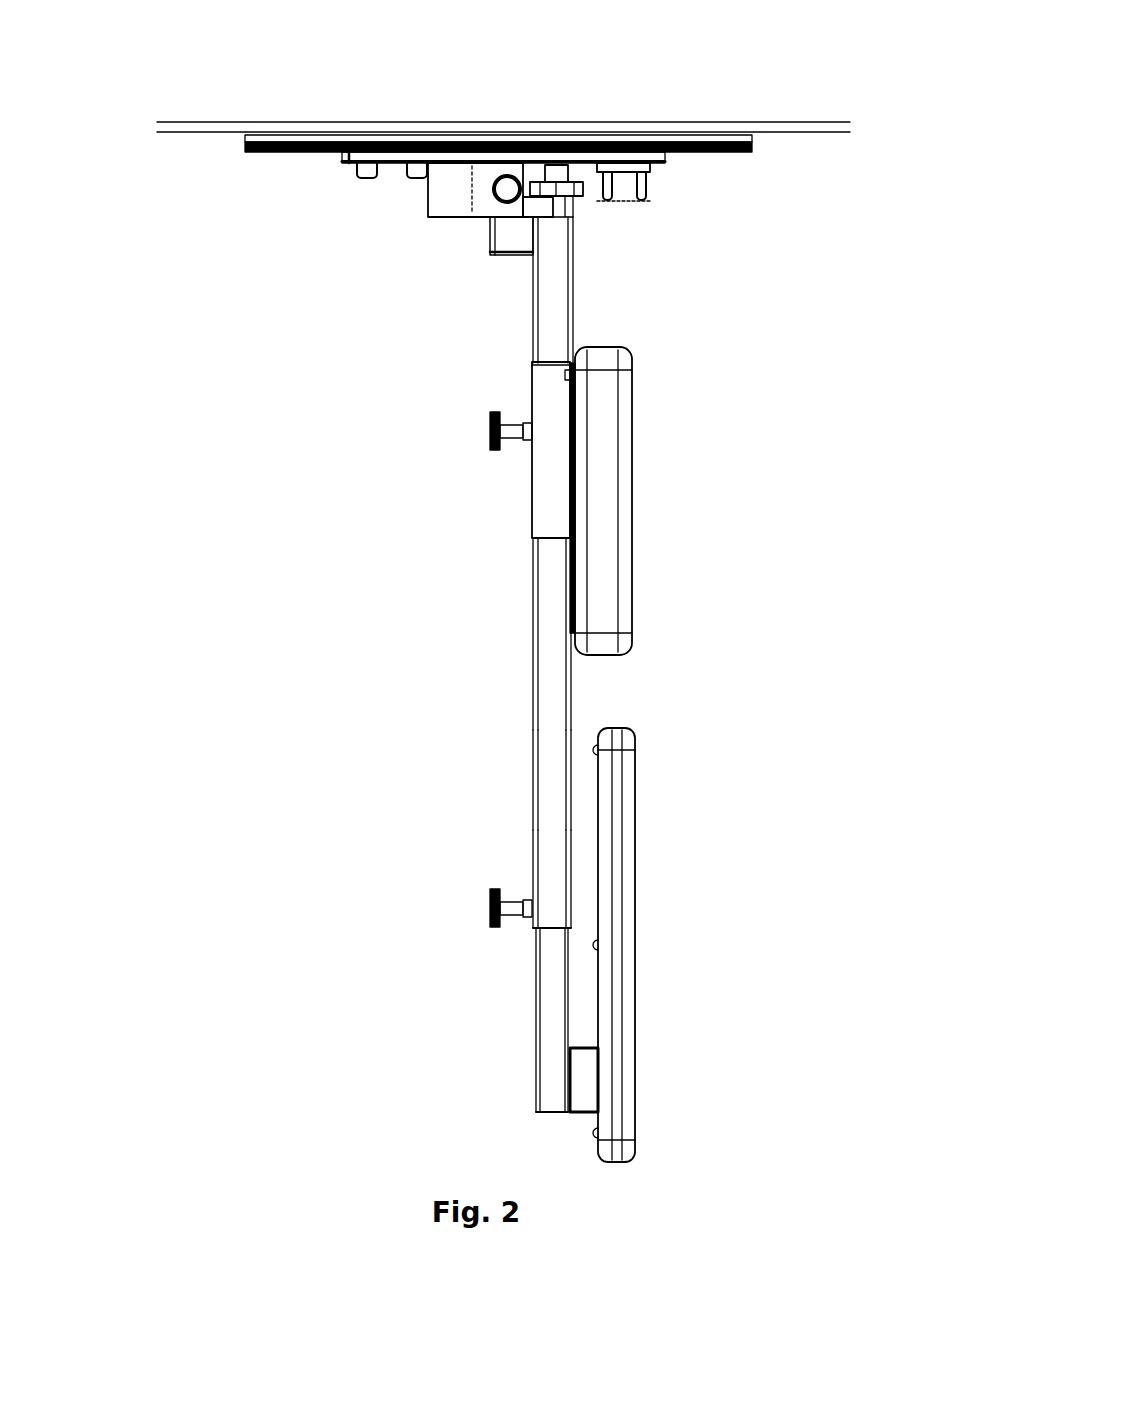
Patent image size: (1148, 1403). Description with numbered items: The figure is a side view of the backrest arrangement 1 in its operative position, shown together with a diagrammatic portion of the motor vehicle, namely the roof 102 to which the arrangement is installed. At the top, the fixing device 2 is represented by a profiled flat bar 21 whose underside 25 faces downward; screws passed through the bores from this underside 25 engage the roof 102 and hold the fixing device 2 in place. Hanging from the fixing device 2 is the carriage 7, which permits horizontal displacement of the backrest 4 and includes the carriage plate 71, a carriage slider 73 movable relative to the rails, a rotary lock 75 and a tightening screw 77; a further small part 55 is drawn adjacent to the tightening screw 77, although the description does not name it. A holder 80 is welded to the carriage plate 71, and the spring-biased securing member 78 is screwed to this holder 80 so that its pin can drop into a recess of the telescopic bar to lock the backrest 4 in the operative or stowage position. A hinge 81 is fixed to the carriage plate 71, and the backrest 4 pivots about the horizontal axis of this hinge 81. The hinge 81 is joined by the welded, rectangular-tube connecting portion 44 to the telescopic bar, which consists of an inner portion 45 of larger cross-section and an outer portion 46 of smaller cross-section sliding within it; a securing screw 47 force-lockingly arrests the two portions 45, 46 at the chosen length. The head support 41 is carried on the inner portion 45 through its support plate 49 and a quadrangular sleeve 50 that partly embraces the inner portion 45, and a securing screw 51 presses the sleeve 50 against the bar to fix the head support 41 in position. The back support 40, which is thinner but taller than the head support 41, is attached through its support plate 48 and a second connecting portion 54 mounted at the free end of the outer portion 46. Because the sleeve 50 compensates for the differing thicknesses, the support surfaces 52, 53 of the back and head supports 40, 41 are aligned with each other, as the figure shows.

The backrest arrangement 1 is at (497, 689).
The fixing device 2 is at (469, 213).
The backrest 4 is at (712, 754).
The carriage 7 is at (509, 205).
The flat bar 21 is at (293, 143).
The underside 25 is at (330, 148).
The back support 40 is at (616, 857).
The head support 41 is at (607, 492).
The connecting portion 44 is at (570, 265).
The inner portion 45 is at (540, 702).
The outer portion 46 is at (552, 989).
The securing screw 47 is at (488, 912).
The support plate 48 is at (598, 802).
The support plate 49 is at (560, 608).
The sleeve 50 is at (540, 515).
The securing screw 51 is at (487, 445).
The support surface 52 is at (631, 557).
The support surface 53 is at (635, 921).
The second connecting portion 54 is at (588, 1072).
The connector 55 is at (548, 165).
The carriage plate 71 is at (372, 163).
The carriage slider 73 is at (400, 155).
The rotary lock 75 is at (627, 188).
The tightening screw 77 is at (583, 197).
The securing member 78 is at (507, 190).
The holder 80 is at (470, 165).
The hinge 81 is at (523, 223).
The roof 102 is at (212, 127).